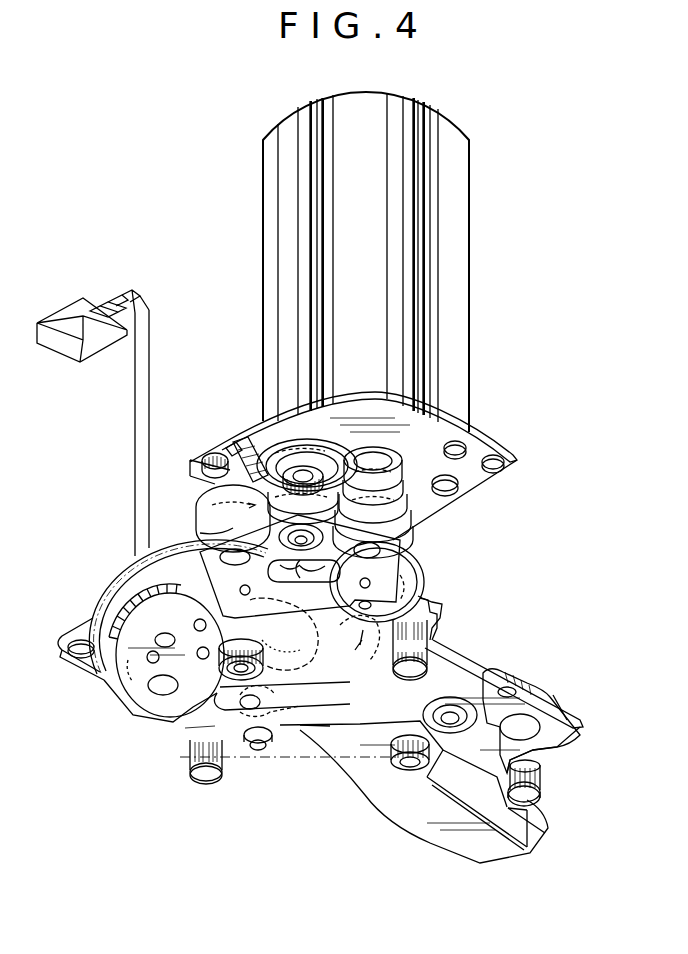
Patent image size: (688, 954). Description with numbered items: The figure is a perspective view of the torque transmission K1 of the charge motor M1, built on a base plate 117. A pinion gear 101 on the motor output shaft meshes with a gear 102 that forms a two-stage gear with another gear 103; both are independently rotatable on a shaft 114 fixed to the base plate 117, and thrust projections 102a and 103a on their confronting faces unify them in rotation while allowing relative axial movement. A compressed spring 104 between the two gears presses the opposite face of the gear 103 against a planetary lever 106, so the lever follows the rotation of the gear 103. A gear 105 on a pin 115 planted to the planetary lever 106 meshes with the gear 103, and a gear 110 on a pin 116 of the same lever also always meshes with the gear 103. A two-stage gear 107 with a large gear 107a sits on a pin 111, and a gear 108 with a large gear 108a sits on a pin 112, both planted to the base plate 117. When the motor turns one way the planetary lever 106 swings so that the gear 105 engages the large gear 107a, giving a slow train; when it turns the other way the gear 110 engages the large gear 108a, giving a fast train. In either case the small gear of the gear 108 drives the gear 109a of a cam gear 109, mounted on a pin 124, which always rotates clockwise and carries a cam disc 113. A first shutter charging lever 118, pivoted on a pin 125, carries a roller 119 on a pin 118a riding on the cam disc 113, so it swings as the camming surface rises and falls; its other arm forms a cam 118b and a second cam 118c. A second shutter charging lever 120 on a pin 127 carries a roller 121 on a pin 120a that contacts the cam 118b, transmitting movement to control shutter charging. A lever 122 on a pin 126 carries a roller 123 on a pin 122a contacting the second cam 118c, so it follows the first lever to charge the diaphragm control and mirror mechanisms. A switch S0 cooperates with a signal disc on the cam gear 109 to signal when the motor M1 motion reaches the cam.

The charge motor M1 is at (468, 180).
The switch S0 is at (37, 335).
The torque transmission K1 is at (558, 491).
The pinion gear 101 is at (371, 457).
The gear 102 is at (244, 440).
The thrust projection 102a is at (236, 446).
The gear 103 is at (200, 482).
The thrust projection 103a is at (300, 475).
The compressed spring 104 is at (200, 466).
The gear 105 is at (402, 494).
The planetary lever 106 is at (432, 574).
The 2-stage gear 107 is at (436, 584).
The large gear 107a is at (428, 610).
The gear 108 is at (220, 664).
The large gear 108a is at (292, 645).
The cam gear 109 is at (138, 599).
The gear 109a is at (100, 665).
The gear 110 is at (199, 512).
The pin 111 is at (410, 623).
The pin 112 is at (305, 620).
The cam disc 113 is at (140, 705).
The shaft 114 is at (380, 548).
The pin 115 is at (415, 562).
The pin 116 is at (210, 538).
The base plate 117 is at (582, 733).
The first shutter charging lever 118 is at (380, 730).
The lever arm 118a is at (275, 712).
The cam 118b is at (540, 826).
The second cam 118c is at (325, 726).
The roller 119 is at (209, 780).
The second shutter charging lever 120 is at (530, 680).
The pin 120a is at (540, 772).
The roller 121 is at (545, 790).
The lever 122 is at (500, 862).
The pin 122a is at (256, 750).
The roller 123 is at (268, 748).
The pin 124 is at (185, 722).
The pin 125 is at (457, 700).
The pin 126 is at (406, 772).
The pin 127 is at (535, 727).